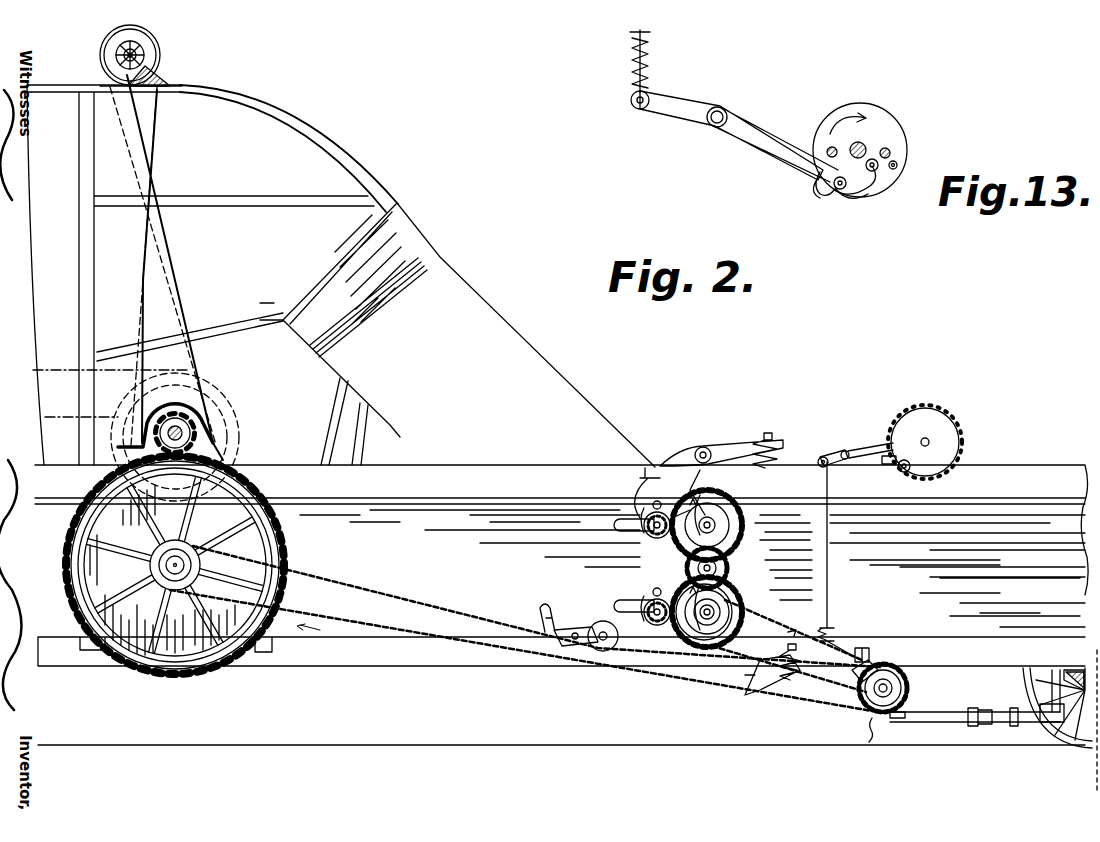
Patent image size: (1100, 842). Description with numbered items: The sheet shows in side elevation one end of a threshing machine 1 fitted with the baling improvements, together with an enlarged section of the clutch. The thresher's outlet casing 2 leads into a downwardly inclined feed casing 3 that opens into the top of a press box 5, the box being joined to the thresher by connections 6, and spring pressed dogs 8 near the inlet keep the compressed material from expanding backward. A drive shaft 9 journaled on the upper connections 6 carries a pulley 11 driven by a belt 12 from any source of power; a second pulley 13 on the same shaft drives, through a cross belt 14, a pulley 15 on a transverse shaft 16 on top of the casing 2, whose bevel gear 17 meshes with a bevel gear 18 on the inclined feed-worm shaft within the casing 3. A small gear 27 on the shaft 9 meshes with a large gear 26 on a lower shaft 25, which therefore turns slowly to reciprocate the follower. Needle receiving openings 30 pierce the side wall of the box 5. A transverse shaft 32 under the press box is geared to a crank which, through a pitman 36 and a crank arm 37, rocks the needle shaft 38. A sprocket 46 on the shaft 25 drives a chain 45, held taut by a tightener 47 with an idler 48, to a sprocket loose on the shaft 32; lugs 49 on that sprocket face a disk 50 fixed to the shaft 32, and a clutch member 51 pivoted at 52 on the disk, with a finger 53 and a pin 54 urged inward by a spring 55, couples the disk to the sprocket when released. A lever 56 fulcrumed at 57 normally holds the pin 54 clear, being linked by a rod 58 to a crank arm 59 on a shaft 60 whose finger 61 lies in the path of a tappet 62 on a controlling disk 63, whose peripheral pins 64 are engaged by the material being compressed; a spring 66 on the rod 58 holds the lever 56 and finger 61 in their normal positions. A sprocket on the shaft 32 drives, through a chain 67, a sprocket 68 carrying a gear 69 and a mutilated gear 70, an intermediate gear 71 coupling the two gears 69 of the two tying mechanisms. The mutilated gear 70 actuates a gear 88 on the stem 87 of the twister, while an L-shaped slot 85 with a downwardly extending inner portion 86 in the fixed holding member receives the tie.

In FIG. 2, the threshing machine 1 is at (200, 275).
In FIG. 2, the outlet casing 2 is at (285, 112).
In FIG. 2, the downwardly inclined casing 3 is at (467, 296).
In FIG. 2, the press box 5 is at (1005, 468).
In FIG. 2, the connections 6 is at (318, 680).
In FIG. 2, the spring pressed dogs 8 is at (672, 460).
In FIG. 2, the drive shaft 9 is at (186, 428).
In FIG. 2, the pulley 11 is at (112, 416).
In FIG. 2, the belt 12 is at (50, 362).
In FIG. 2, the pulley 13 is at (215, 437).
In FIG. 2, the cross belt 14 is at (178, 342).
In FIG. 2, the pulley 15 is at (158, 47).
In FIG. 2, the transverse shaft 16 is at (116, 48).
In FIG. 2, the bevel gear 17 is at (124, 58).
In FIG. 2, the bevel gear 18 is at (162, 75).
In FIG. 2, the shaft 25 is at (209, 588).
In FIG. 2, the large gear 26 is at (252, 655).
In FIG. 2, the small gear 27 is at (182, 410).
In FIG. 2, the needle receiving openings 30 is at (618, 524).
In FIG. 2, the shaft 32 is at (905, 688).
In FIG. 13, the shaft 32 is at (866, 145).
In FIG. 2, the pitman 36 is at (948, 724).
In FIG. 2, the crank arm 37 is at (1052, 714).
In FIG. 2, the needle shaft 38 is at (1052, 690).
In FIG. 2, the chain 45 is at (838, 712).
In FIG. 2, the sprocket 46 is at (168, 640).
In FIG. 2, the tightener 47 is at (562, 642).
In FIG. 2, the idler 48 is at (602, 652).
In FIG. 13, the lugs 49 is at (832, 146).
In FIG. 13, the disk 50 is at (870, 105).
In FIG. 13, the clutch member 51 is at (868, 172).
In FIG. 13, the pivot 52 is at (896, 170).
In FIG. 13, the finger 53 is at (818, 192).
In FIG. 13, the pin 54 is at (840, 190).
In FIG. 13, the spring 55 is at (866, 196).
In FIG. 2, the lever 56 is at (882, 672).
In FIG. 13, the lever 56 is at (758, 132).
In FIG. 2, the fulcrum 57 is at (866, 652).
In FIG. 13, the fulcrum 57 is at (720, 112).
In FIG. 2, the rod 58 is at (826, 550).
In FIG. 13, the rod 58 is at (628, 47).
In FIG. 2, the crank arm 59 is at (822, 456).
In FIG. 2, the shaft 60 is at (845, 450).
In FIG. 2, the finger 61 is at (862, 446).
In FIG. 2, the tappet 62 is at (908, 470).
In FIG. 2, the controlling disk 63 is at (932, 412).
In FIG. 2, the pins or teeth 64 is at (915, 408).
In FIG. 2, the spring 66 is at (834, 632).
In FIG. 13, the spring 66 is at (650, 72).
In FIG. 2, the chain 67 is at (780, 625).
In FIG. 2, the sprocket 68 is at (702, 634).
In FIG. 2, the gear 69 is at (728, 512).
In FIG. 2, the mutilated gear 70 is at (694, 628).
In FIG. 2, the intermediate gear 71 is at (724, 580).
In FIG. 2, the L-shaped slot 85 is at (650, 528).
In FIG. 2, the downwardly extending inner portion 86 is at (650, 622).
In FIG. 2, the stem 87 is at (657, 530).
In FIG. 2, the gear 88 is at (640, 515).